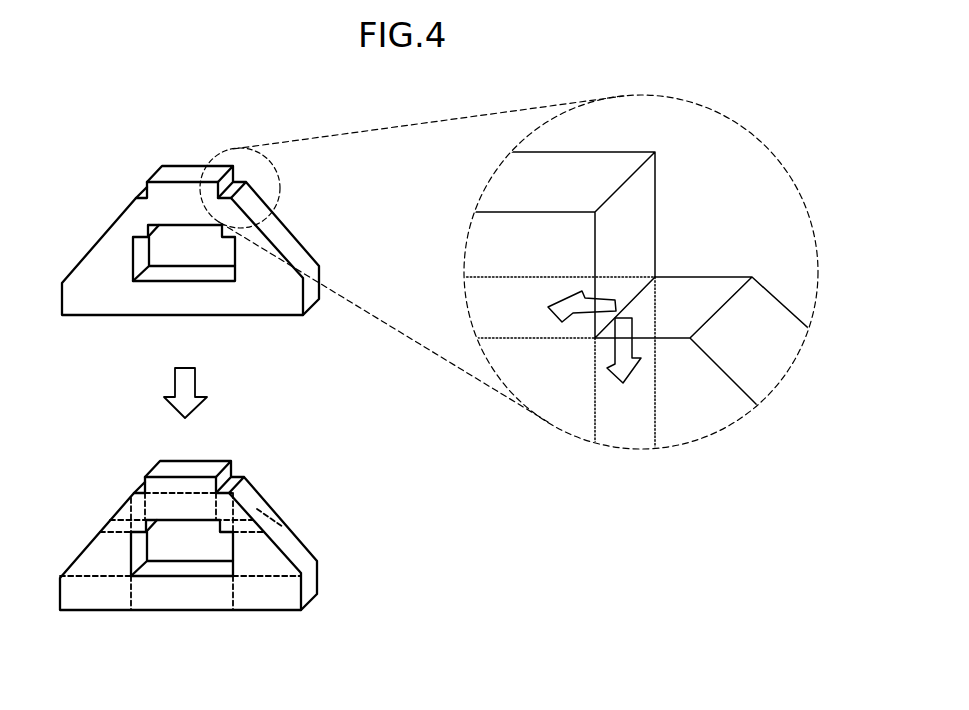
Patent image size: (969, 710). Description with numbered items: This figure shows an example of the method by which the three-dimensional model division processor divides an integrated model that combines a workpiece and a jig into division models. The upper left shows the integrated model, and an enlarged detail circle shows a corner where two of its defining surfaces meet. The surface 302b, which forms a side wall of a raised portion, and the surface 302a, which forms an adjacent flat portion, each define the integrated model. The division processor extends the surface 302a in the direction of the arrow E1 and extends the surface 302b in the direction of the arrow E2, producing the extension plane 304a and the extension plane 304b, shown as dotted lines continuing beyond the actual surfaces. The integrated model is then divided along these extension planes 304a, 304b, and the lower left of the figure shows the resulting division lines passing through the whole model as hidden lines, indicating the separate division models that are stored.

The surface 302a is at (673, 307).
The surface 302b is at (623, 243).
The extension plane 304a is at (642, 432).
The extension plane 304b is at (498, 293).
The arrow E1 is at (624, 364).
The arrow E2 is at (565, 306).